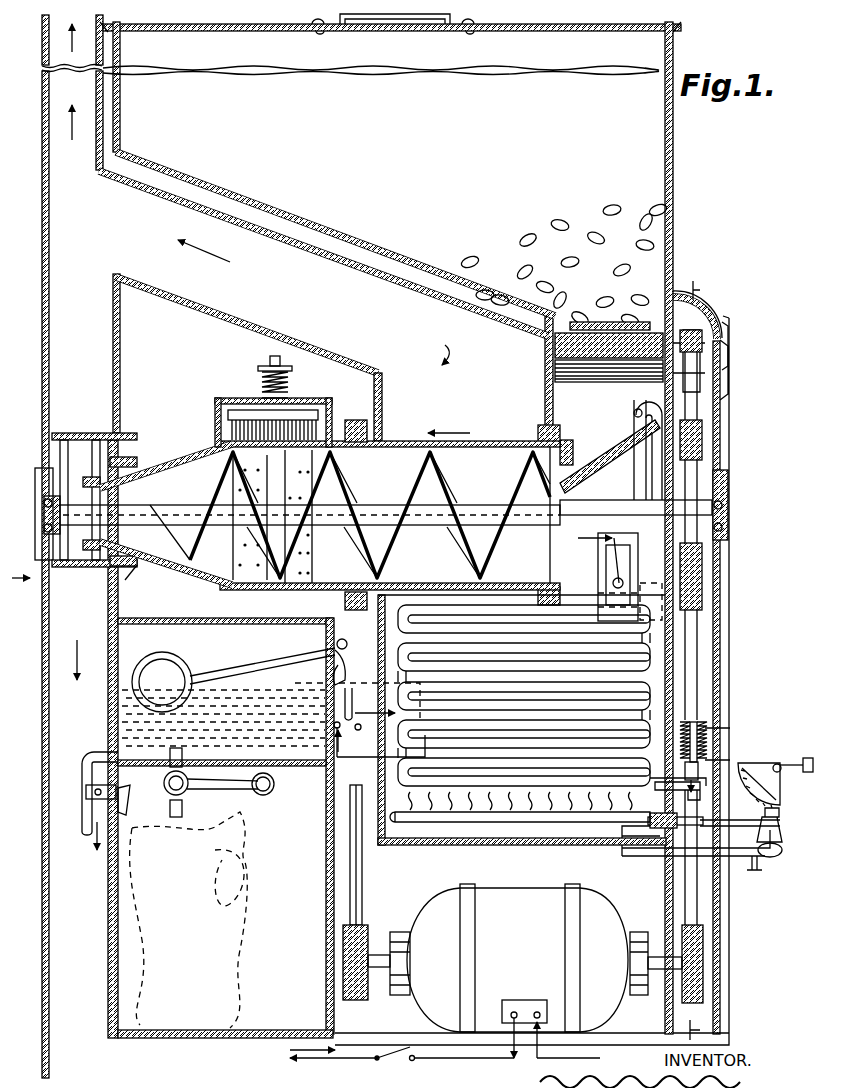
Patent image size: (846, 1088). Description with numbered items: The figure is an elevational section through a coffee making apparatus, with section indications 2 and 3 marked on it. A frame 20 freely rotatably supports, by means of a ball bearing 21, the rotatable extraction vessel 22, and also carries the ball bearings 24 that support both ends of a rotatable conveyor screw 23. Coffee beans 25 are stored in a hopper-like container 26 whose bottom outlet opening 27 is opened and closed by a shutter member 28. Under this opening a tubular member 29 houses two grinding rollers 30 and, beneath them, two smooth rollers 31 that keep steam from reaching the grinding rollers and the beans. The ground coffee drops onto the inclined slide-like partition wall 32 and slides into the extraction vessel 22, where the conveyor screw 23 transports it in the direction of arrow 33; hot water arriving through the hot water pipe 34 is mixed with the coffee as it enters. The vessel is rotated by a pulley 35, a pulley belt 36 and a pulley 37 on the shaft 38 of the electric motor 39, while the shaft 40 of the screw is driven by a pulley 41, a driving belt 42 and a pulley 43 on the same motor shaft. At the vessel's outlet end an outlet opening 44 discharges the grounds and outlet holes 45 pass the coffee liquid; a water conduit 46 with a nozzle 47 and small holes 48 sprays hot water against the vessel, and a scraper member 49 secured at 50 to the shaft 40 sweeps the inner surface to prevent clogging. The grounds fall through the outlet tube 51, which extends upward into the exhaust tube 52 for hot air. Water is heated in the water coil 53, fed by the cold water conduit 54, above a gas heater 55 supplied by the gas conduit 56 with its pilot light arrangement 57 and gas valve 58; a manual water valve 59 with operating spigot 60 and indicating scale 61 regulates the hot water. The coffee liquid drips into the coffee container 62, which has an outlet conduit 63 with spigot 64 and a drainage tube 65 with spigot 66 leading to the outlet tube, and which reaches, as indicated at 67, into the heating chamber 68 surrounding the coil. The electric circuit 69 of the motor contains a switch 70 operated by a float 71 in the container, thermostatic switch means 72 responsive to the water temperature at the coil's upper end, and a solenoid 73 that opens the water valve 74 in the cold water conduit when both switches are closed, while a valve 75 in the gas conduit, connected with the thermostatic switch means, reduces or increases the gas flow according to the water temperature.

The section line 2 is at (137, 575).
The section line 3 is at (19, 565).
The frame 20 is at (47, 420).
The ball bearing 21 is at (128, 457).
The rotatable extraction vessel 22 is at (380, 440).
The conveyor screw 23 is at (468, 500).
The ball bearings 24 is at (46, 503).
The coffee beans 25 is at (652, 220).
The hopper-like container 26 is at (640, 145).
The outlet opening 27 is at (680, 282).
The shutter member 28 is at (722, 292).
The tubular member 29 is at (548, 392).
The grinding rollers 30 is at (560, 325).
The smooth rollers 31 is at (640, 380).
The inclined slide-like partition wall 32 is at (620, 465).
The arrow 33 is at (445, 432).
The hot water pipe 34 is at (662, 408).
The pulley 35 is at (360, 418).
The pulley belt 36 is at (362, 872).
The pulley 37 is at (365, 988).
The shaft 38 is at (378, 953).
The electric motor 39 is at (510, 900).
The shaft 40 is at (596, 504).
The pulley 41 is at (705, 598).
The driving belt 42 is at (700, 668).
The pulley 43 is at (702, 992).
The outlet opening 44 is at (90, 552).
The outlet holes 45 is at (295, 590).
The water conduit 46 is at (272, 368).
The nozzle 47 is at (232, 410).
The small holes 48 is at (240, 424).
The scraper member 49 is at (245, 460).
The securing point 50 is at (275, 520).
The outlet tube 51 is at (70, 708).
The exhaust tube 52 is at (72, 140).
The water coil 53 is at (645, 718).
The cold water conduit 54 is at (781, 762).
The gas heater 55 is at (405, 814).
The gas conduit 56 is at (775, 818).
The pilot light arrangement 57 is at (650, 860).
The gas valve 58 is at (772, 870).
The water valve 59 is at (775, 764).
The operating spigot 60 is at (759, 770).
The indicating scale 61 is at (806, 756).
The coffee container 62 is at (215, 632).
The outlet conduit 63 is at (185, 802).
The spigot 64 is at (248, 795).
The drainage tube 65 is at (88, 780).
The spigot 66 is at (92, 808).
The extension of coffee container 67 is at (390, 750).
The heating chamber 68 is at (448, 846).
The electric circuit 69 is at (478, 1060).
The electric switch 70 is at (366, 683).
The float 71 is at (245, 660).
The thermostatic switch means 72 is at (616, 574).
The solenoid 73 is at (710, 720).
The water valve 74 is at (702, 752).
The valve 75 is at (680, 828).